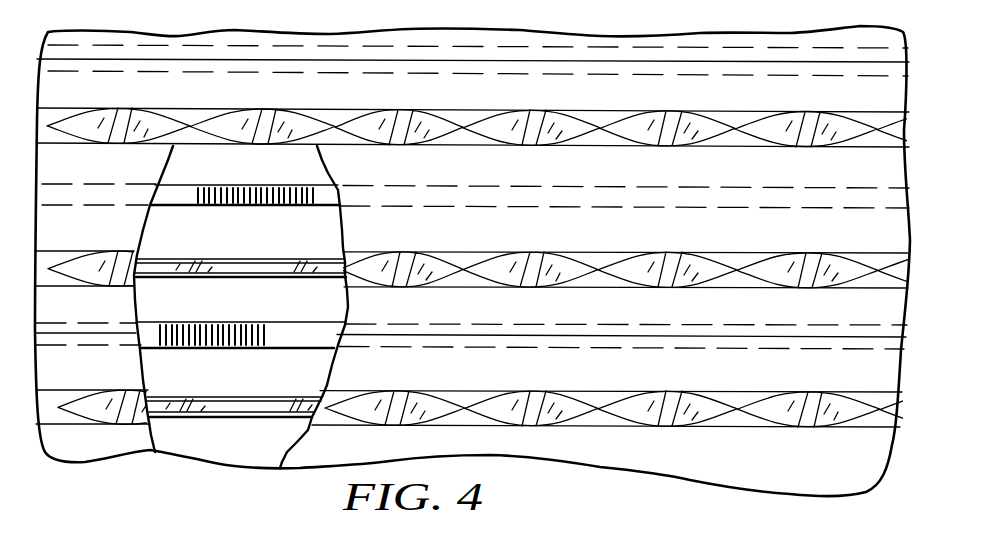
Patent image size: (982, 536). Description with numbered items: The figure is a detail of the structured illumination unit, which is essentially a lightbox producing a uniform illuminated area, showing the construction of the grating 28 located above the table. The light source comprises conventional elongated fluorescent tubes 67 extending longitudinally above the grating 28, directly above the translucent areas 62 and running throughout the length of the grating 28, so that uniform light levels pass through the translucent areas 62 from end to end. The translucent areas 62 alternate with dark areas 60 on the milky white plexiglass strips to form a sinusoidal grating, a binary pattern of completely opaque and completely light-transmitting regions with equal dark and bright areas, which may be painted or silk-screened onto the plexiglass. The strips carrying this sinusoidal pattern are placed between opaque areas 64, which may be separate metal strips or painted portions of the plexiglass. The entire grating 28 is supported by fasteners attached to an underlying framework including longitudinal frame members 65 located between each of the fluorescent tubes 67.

The grating 28 is at (772, 10).
The dark areas 60 is at (377, 128).
The translucent areas 62 is at (597, 139).
The opaque areas 64 is at (340, 220).
The longitudinal frame members 65 is at (266, 164).
The fluorescent tubes 67 is at (186, 278).